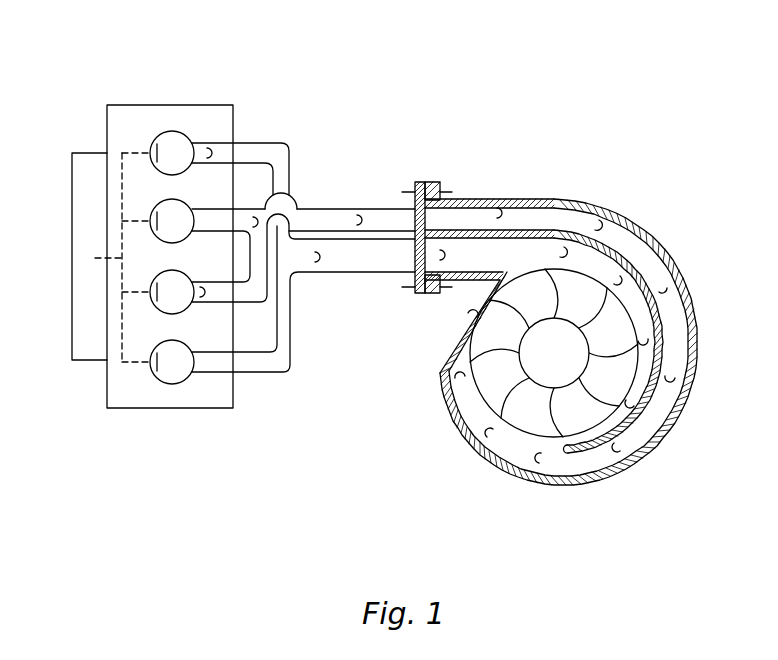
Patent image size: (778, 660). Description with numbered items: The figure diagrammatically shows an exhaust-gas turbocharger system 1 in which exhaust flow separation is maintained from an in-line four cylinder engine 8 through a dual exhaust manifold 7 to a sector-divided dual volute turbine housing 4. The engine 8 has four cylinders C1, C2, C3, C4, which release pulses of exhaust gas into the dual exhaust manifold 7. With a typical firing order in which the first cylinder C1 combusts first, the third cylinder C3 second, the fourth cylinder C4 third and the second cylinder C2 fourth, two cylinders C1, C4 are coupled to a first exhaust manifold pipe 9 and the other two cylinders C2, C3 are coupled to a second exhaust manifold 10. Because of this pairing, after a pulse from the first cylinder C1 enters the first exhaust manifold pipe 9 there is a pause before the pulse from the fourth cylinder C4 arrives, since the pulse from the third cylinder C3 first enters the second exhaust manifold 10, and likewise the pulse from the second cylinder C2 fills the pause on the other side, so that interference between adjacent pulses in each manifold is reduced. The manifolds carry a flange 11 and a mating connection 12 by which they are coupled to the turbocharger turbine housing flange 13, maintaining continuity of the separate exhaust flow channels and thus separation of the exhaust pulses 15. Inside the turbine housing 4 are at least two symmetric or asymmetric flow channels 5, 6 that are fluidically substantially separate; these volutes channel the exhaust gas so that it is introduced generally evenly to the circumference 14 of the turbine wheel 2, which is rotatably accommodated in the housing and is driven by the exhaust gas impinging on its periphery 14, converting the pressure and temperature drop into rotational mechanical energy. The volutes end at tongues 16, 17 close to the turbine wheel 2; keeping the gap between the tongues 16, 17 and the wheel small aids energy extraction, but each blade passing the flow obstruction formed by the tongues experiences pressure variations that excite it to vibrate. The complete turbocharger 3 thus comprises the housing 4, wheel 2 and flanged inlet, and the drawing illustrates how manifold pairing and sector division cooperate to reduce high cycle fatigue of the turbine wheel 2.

The exhaust-gas turbocharger system 1 is at (440, 100).
The turbine wheel 2 is at (523, 425).
The turbocharger 3 is at (705, 266).
The turbine housing 4 is at (630, 206).
The flow channel 5 is at (641, 323).
The flow channel 6 is at (640, 258).
The dual exhaust manifold 7 is at (281, 115).
The engine 8 is at (187, 110).
The first exhaust manifold pipe 9 is at (285, 168).
The second exhaust manifold 10 is at (330, 218).
The flange 11 is at (414, 181).
The turbine inlet flange 12 is at (431, 181).
The turbine housing flange 13 is at (413, 295).
The periphery of the turbine wheel 14 is at (483, 398).
The exhaust pulses 15 is at (528, 198).
The tongue 16 is at (560, 447).
The tongue 17 is at (517, 270).
The first cylinder C1 is at (170, 377).
The second cylinder C2 is at (163, 305).
The third cylinder C3 is at (158, 203).
The fourth cylinder C4 is at (160, 140).